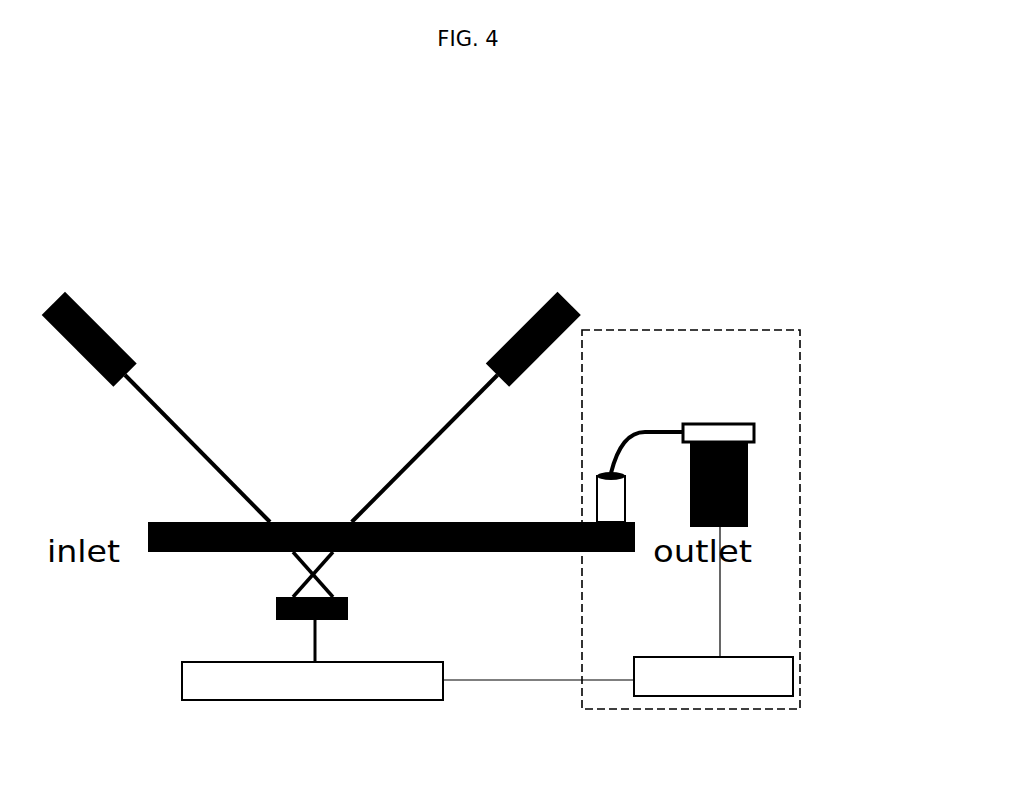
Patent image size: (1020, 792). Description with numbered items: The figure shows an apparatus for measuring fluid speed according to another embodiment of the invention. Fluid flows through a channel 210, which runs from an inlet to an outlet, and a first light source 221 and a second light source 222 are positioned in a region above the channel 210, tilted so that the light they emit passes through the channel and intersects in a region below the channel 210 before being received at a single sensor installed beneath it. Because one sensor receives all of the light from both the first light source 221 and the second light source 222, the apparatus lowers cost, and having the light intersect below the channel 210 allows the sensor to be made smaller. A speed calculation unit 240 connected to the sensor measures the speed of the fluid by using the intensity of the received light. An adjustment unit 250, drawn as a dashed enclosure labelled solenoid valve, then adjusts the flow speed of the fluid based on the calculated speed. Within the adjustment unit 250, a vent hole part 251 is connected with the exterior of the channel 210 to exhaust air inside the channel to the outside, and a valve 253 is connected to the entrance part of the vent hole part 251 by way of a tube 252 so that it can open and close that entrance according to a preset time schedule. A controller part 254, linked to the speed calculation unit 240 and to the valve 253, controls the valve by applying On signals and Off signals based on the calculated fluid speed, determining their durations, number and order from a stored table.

The channel 210 is at (163, 522).
The first light source 221 is at (82, 309).
The second light source 222 is at (535, 310).
The speed calculation unit 240 is at (182, 690).
The adjustment unit 250 is at (698, 329).
The vent hole part 251 is at (597, 492).
The tube 252 is at (622, 442).
The valve 253 is at (748, 486).
The controller part 254 is at (793, 685).